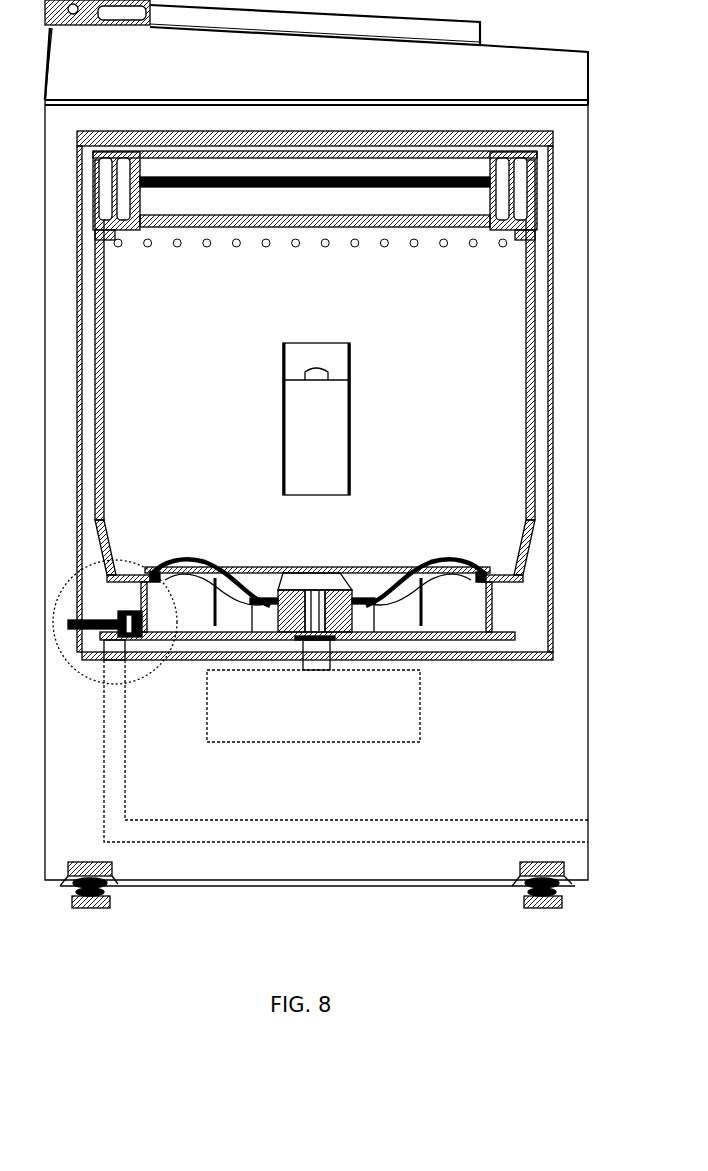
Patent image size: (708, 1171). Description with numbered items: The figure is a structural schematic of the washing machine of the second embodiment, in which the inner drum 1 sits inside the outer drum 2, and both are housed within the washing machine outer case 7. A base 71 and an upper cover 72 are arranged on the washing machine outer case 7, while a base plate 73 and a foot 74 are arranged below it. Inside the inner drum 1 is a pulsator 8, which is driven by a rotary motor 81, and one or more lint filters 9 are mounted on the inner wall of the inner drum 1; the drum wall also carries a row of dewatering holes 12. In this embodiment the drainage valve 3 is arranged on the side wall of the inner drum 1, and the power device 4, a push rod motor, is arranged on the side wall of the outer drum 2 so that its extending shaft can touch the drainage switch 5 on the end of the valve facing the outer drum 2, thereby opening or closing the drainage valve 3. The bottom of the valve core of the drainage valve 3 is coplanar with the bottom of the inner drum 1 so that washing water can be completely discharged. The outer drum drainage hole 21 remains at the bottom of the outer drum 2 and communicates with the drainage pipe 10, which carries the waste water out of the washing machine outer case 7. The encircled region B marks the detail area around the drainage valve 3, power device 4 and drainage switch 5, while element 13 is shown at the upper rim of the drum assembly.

The inner drum 1 is at (100, 431).
The outer drum 2 is at (496, 660).
The drainage valve 3 is at (317, 618).
The power device 4 is at (70, 636).
The drainage switch 5 is at (110, 610).
The washing machine outer case 7 is at (588, 773).
The pulsator 8 is at (440, 562).
The lint filter 9 is at (335, 448).
The drainage pipe 10 is at (238, 834).
The dewatering hole 12 is at (180, 248).
The balance block 13 is at (532, 215).
The outer drum drainage hole 21 is at (118, 660).
The base 71 is at (588, 70).
The upper cover 72 is at (386, 24).
The base plate 73 is at (45, 846).
The foot 74 is at (520, 868).
The rotary motor 81 is at (330, 742).
The detail region B is at (70, 579).